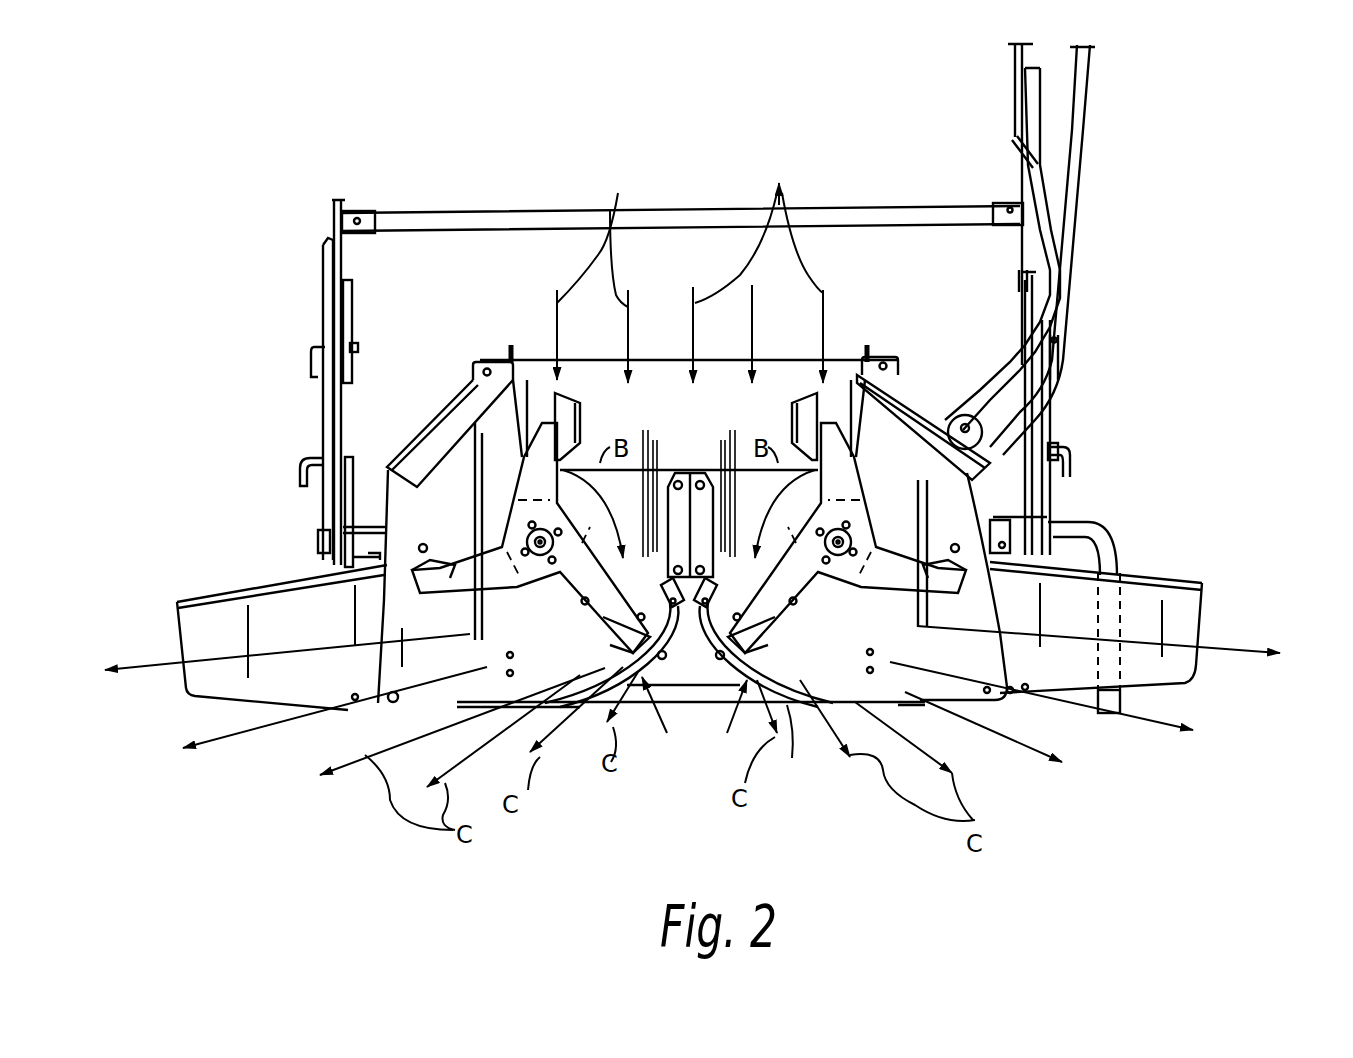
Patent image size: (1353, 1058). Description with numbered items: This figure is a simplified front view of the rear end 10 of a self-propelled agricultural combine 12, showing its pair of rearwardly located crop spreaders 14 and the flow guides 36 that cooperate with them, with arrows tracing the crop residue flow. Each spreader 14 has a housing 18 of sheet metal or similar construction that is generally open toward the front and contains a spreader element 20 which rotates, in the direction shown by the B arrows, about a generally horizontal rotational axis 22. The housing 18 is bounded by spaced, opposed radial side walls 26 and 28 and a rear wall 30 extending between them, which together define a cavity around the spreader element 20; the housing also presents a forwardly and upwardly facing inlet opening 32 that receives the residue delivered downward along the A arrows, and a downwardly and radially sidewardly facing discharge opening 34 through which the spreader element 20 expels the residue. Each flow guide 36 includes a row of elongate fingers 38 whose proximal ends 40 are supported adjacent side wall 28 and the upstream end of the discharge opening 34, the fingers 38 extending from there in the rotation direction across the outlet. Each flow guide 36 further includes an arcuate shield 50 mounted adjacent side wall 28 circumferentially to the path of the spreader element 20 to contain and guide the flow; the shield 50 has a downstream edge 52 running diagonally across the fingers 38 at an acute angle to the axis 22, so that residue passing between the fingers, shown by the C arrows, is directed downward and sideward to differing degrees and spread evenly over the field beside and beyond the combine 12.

The rear end 10 is at (1117, 200).
The self-propelled agricultural combine 12 is at (1117, 200).
The crop spreader 14 is at (398, 451).
The housing 18 is at (433, 420).
The spreader element 20 is at (560, 393).
The rotational axis 22 is at (542, 553).
The radial side wall 26 is at (383, 487).
The radial side wall 28 is at (693, 470).
The rear wall 30 is at (656, 390).
The inlet opening 32 is at (537, 373).
The discharge opening 34 is at (437, 695).
The crop residue flow guide 36 is at (689, 688).
The elongate finger 38 is at (674, 734).
The proximal end 40 is at (693, 628).
The shield 50 is at (627, 662).
The downstream edge 52 is at (180, 600).